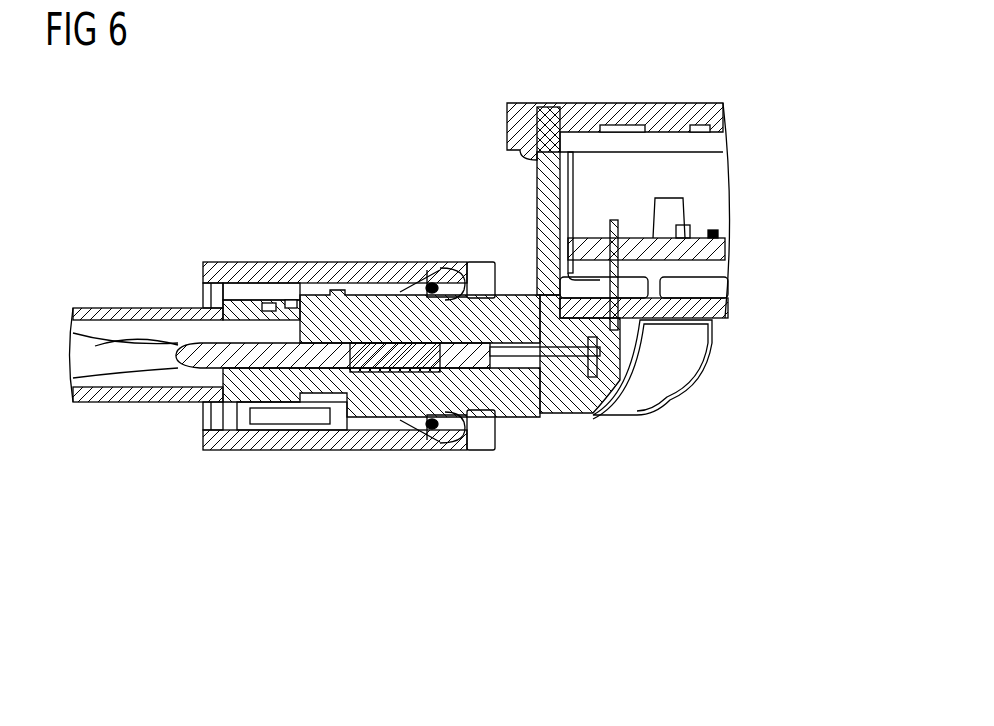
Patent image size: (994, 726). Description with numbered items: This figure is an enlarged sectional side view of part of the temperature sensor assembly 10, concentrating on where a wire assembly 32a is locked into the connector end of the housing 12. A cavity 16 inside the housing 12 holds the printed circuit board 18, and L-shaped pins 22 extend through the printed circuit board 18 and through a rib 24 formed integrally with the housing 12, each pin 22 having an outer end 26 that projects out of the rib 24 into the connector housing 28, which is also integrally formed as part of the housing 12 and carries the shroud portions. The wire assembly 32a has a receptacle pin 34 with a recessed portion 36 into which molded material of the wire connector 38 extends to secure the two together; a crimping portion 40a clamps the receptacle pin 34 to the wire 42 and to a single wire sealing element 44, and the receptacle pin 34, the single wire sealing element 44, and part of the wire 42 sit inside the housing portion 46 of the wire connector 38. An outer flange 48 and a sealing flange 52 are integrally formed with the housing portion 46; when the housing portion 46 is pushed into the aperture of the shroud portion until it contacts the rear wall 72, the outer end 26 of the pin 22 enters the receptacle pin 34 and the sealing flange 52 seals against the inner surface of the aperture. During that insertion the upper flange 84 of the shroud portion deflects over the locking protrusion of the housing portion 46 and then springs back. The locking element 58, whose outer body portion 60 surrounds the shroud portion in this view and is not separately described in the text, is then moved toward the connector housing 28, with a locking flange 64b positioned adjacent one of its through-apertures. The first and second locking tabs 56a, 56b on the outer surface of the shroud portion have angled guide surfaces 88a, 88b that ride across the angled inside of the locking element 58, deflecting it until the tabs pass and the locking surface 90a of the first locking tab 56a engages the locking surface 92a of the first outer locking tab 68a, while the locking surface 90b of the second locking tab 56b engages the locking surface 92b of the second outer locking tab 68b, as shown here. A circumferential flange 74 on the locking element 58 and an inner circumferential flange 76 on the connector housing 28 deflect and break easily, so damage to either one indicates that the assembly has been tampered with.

The temperature sensor assembly 10 is at (346, 102).
The housing 12 is at (552, 186).
The cavity 16 is at (703, 193).
The printed circuit board 18 is at (710, 253).
The pins 22 is at (660, 327).
The rib 24 is at (660, 377).
The outer end 26 is at (515, 415).
The connector housing 28 is at (544, 450).
The wire assembly 32a is at (290, 395).
The receptacle pin 34 is at (505, 292).
The recessed portion 36 is at (395, 330).
The wire connector 38 is at (320, 420).
The crimping portion 40a is at (350, 420).
The wire 42 is at (210, 360).
The single wire sealing element 44 is at (248, 422).
The housing portion 46 is at (385, 415).
The outer flange 48 is at (215, 428).
The sealing flange 52 is at (440, 345).
The first locking tab 56a is at (410, 300).
The second locking tab 56b is at (420, 440).
The locking element 58 is at (280, 214).
The outer housing 60 is at (313, 262).
The second locking flange 64b is at (207, 296).
The first outer locking tab 68a is at (470, 297).
The second outer locking tab 68b is at (470, 440).
The rear wall 72 is at (580, 415).
The circumferential flange 74 is at (490, 262).
The inner circumferential flange 76 is at (500, 445).
The upper flange 84 is at (290, 300).
The angled guide surface 88a is at (405, 292).
The angled guide surface 88b is at (410, 412).
The locking surface 90a is at (462, 283).
The locking surface 90b is at (448, 440).
The locking surface 92a is at (432, 282).
The locking surface 92b is at (432, 432).